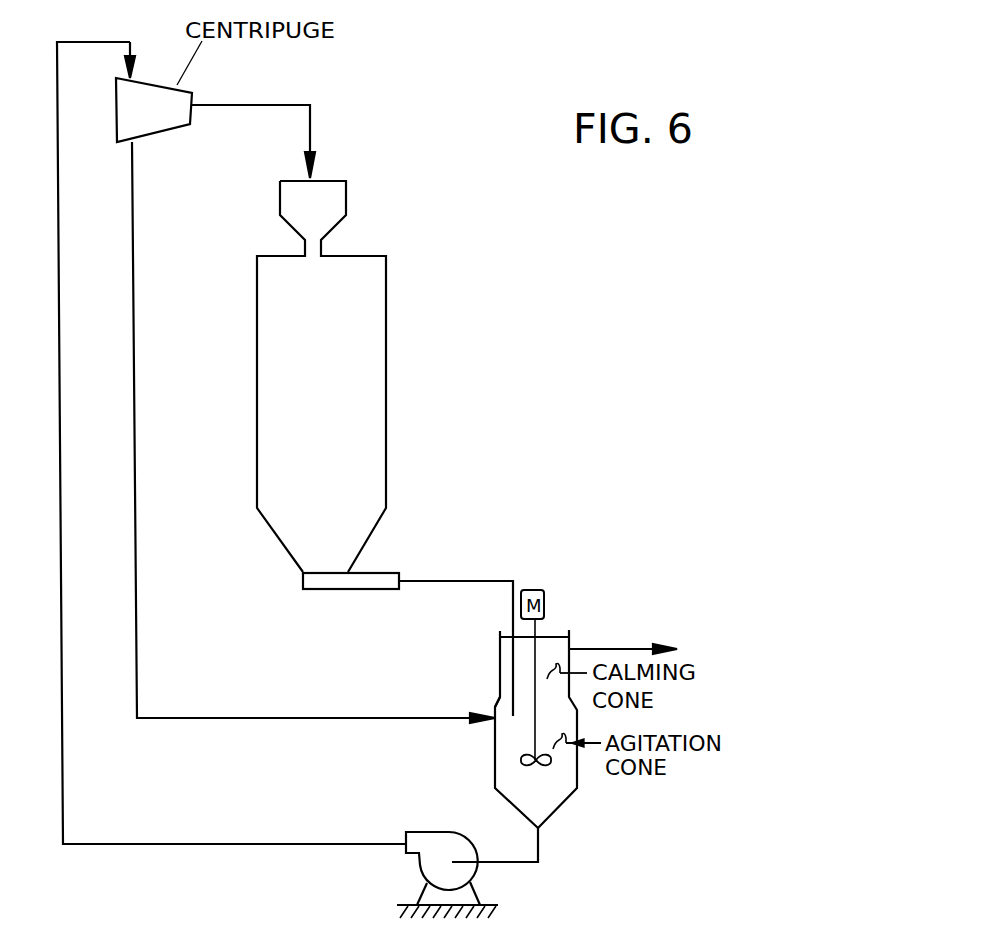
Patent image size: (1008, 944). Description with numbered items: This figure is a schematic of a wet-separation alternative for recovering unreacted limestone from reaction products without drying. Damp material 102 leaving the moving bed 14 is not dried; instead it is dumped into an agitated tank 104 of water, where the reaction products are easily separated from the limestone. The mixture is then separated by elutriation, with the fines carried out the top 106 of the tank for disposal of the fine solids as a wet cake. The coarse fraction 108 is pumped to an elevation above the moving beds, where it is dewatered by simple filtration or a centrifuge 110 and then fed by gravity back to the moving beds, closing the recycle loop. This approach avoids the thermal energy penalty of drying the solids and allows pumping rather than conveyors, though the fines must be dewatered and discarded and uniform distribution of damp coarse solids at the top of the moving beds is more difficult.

The centrifuge 110 is at (194, 96).
The moving bed 14 is at (378, 430).
The damp material 102 is at (463, 580).
The agitated tank 104 is at (509, 717).
The top of the tank 106 is at (607, 646).
The coarse fraction 108 is at (542, 851).